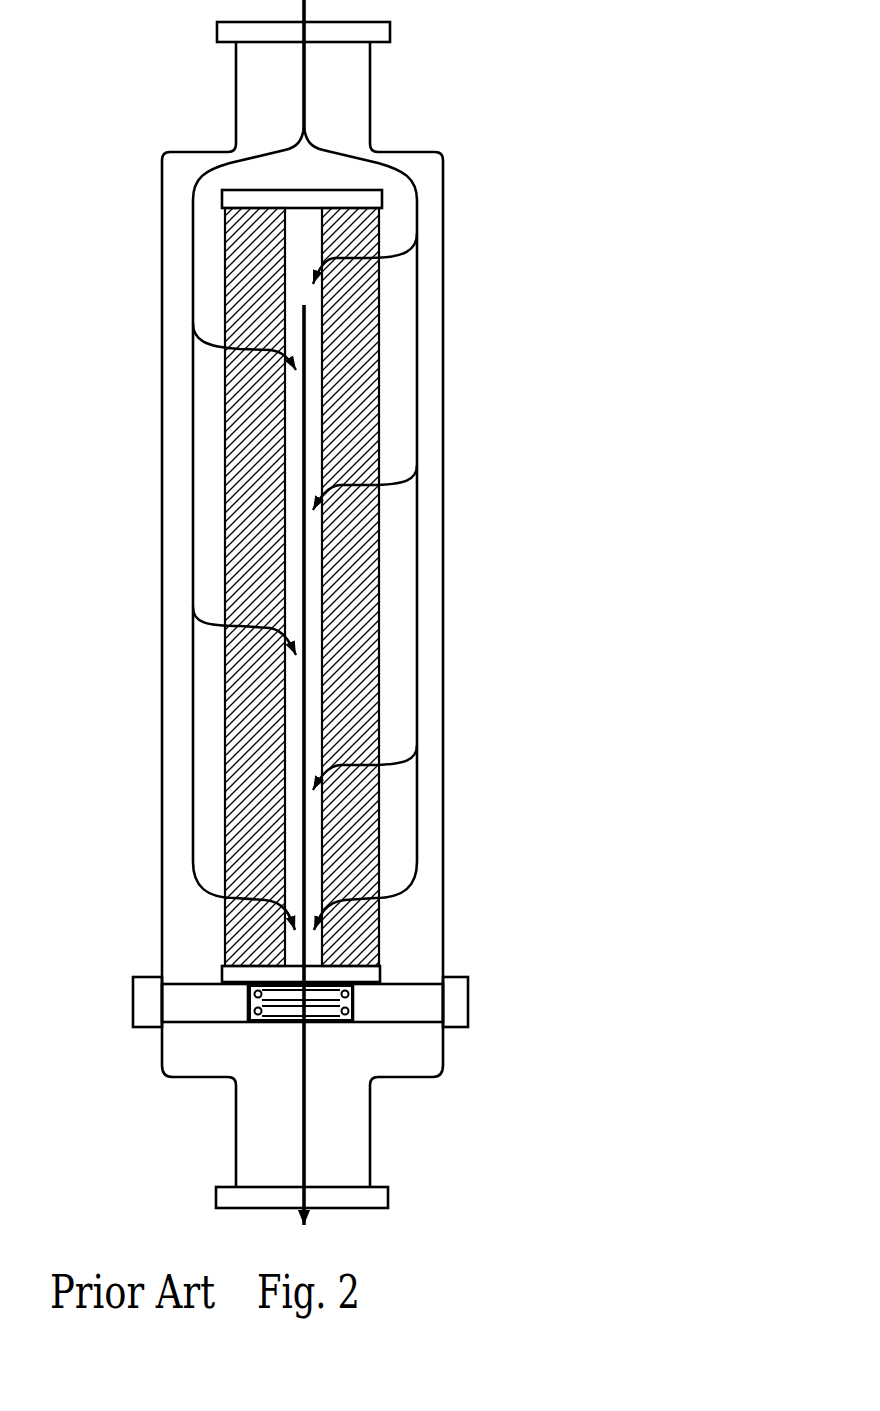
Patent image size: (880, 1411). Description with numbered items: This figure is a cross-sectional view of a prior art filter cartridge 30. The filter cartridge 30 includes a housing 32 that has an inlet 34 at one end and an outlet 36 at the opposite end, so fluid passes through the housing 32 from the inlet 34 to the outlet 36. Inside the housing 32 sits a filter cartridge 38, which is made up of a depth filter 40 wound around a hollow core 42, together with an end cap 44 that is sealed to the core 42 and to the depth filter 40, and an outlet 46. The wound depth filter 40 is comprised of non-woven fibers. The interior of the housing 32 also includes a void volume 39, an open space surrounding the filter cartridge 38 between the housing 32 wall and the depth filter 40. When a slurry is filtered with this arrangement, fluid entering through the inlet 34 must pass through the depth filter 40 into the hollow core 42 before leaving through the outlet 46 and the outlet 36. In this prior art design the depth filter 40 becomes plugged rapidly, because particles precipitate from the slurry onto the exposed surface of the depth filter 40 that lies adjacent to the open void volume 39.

The filter cartridge 30 is at (349, 626).
The housing 32 is at (443, 777).
The inlet 34 is at (347, 30).
The outlet 36 is at (352, 1200).
The filter cartridge 38 is at (378, 293).
The void volume 39 is at (424, 167).
The depth filter 40 is at (363, 610).
The hollow core 42 is at (292, 243).
The end cap 44 is at (338, 198).
The outlet 46 is at (293, 1018).